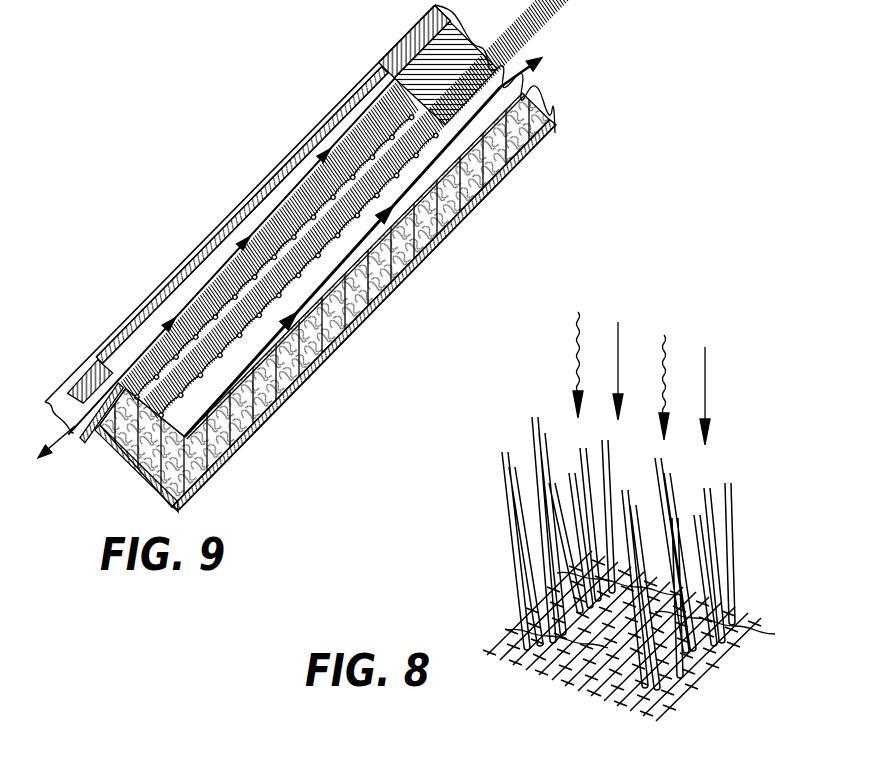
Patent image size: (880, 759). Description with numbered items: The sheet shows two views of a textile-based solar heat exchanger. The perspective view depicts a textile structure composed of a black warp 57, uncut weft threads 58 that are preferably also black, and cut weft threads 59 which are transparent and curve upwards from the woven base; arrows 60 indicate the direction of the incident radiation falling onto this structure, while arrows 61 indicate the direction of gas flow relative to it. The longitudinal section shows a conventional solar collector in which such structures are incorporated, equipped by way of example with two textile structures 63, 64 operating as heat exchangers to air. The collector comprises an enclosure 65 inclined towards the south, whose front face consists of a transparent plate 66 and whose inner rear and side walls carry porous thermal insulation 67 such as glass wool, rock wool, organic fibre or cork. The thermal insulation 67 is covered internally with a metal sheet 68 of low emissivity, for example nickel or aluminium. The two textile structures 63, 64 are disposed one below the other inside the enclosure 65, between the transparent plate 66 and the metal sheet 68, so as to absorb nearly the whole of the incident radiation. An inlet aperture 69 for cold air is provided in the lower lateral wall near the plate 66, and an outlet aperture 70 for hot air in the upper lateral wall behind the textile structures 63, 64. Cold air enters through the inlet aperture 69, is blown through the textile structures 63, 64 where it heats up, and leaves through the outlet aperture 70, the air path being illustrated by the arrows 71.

In FIG. 8, the black warp 57 is at (547, 677).
In FIG. 8, the uncut weft threads 58 is at (497, 650).
In FIG. 8, the cut weft threads 59 is at (515, 553).
In FIG. 8, the direction of the incident radiation 60 is at (578, 366).
In FIG. 8, the direction of gas flow 61 is at (705, 388).
In FIG. 9, the textile structure 63 is at (240, 277).
In FIG. 9, the textile structure 64 is at (330, 360).
In FIG. 9, the enclosure 65 is at (295, 393).
In FIG. 9, the transparent plate 66 is at (293, 160).
In FIG. 9, the porous thermal insulation 67 is at (378, 306).
In FIG. 9, the metal sheet 68 is at (403, 287).
In FIG. 9, the inlet aperture 69 is at (72, 432).
In FIG. 9, the outlet aperture 70 is at (498, 80).
In FIG. 9, the arrows 71 is at (520, 85).